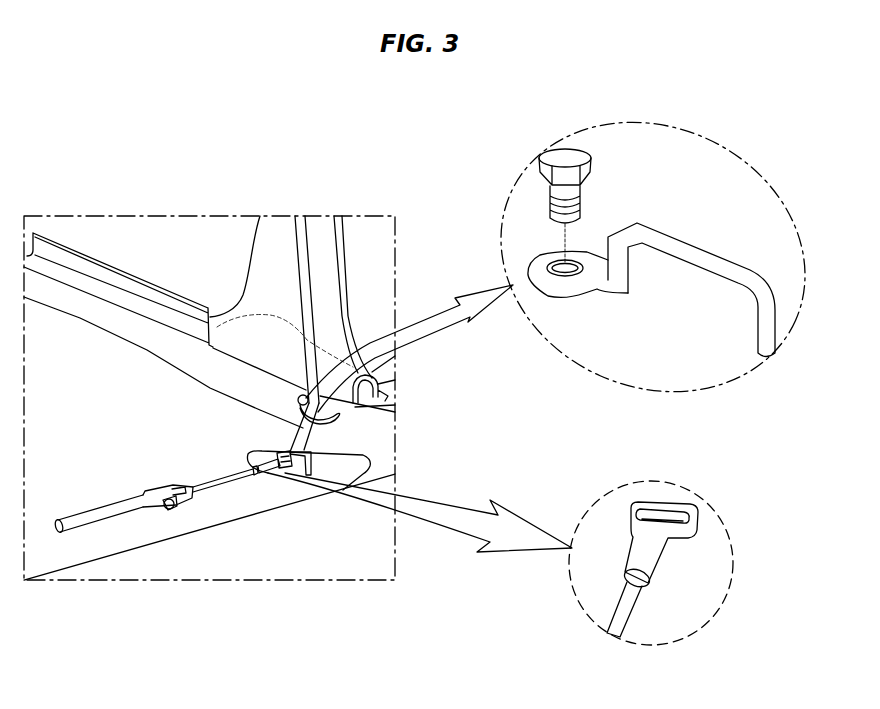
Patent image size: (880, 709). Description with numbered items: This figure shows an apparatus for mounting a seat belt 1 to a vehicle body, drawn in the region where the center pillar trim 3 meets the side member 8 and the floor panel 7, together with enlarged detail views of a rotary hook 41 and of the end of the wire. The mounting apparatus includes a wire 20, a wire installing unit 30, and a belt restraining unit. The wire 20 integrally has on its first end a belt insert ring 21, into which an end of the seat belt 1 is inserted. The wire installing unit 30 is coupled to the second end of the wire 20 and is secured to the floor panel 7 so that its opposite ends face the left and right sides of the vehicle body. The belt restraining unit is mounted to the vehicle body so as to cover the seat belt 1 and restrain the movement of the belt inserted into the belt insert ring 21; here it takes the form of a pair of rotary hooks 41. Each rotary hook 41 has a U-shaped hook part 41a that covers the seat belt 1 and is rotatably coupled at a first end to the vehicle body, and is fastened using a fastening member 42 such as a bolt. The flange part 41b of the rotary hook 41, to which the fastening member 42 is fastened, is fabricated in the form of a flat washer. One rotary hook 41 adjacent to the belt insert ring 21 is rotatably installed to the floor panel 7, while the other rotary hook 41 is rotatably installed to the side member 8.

The seat belt 1 is at (308, 237).
The center pillar trim 3 is at (263, 240).
The floor panel 7 is at (145, 532).
The side member 8 is at (93, 287).
The wire 20 is at (228, 482).
The belt insert ring 21 is at (256, 452).
The wire installing unit 30 is at (108, 520).
The rotary hook 41 is at (551, 278).
The hook part 41a is at (708, 257).
The flange part 41b is at (537, 263).
The fastening member 42 is at (299, 404).